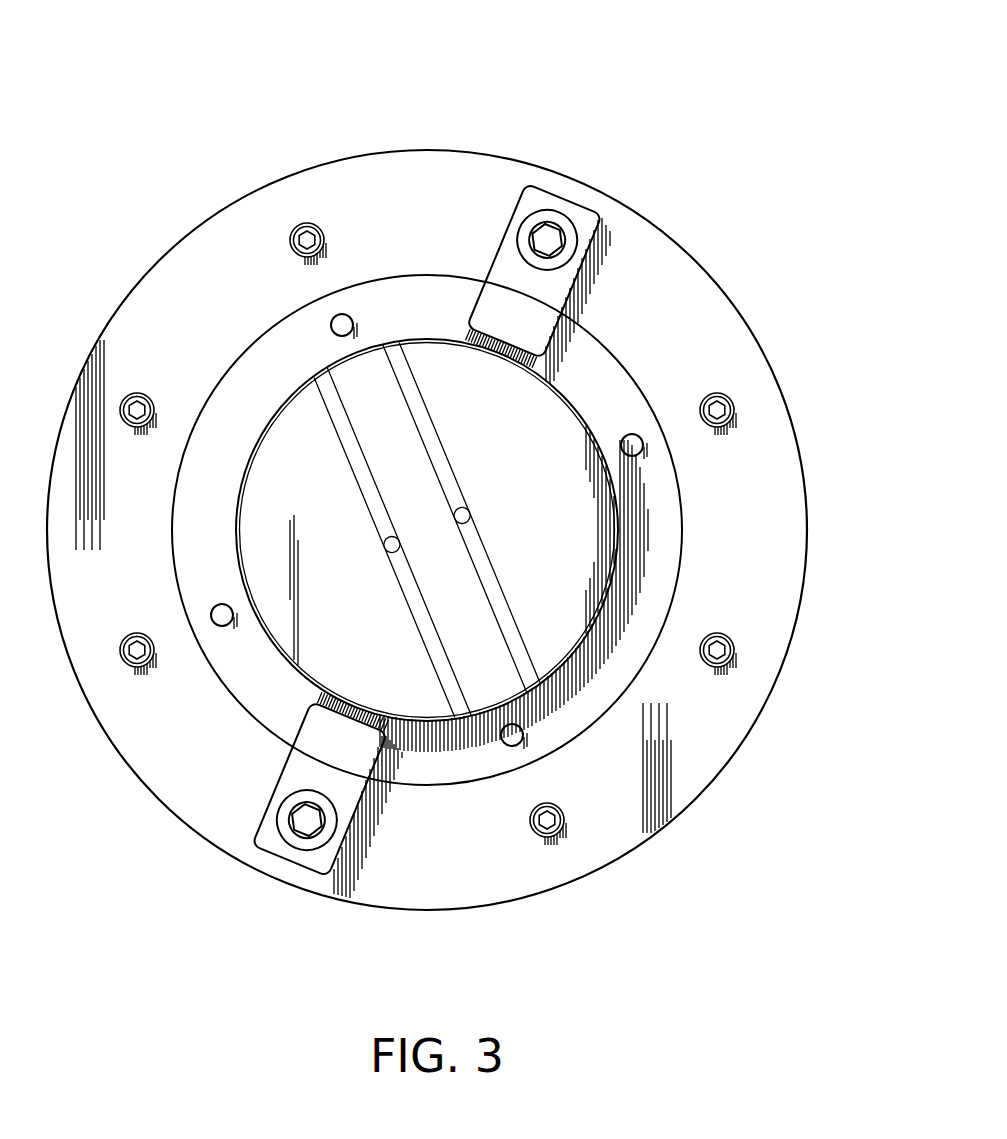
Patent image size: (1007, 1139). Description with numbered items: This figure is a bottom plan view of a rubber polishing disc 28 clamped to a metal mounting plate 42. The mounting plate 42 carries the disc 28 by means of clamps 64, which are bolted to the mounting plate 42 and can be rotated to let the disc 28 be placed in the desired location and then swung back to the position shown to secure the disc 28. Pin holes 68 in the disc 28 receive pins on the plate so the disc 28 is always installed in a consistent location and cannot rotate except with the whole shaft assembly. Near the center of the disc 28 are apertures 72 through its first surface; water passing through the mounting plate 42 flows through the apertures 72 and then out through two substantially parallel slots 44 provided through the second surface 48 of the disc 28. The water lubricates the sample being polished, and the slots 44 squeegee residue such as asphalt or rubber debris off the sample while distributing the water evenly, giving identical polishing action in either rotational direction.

The disc 28 is at (260, 433).
The mounting plate 42 is at (582, 188).
The slot 44 is at (393, 583).
The second surface 48 is at (558, 558).
The clamp 64 is at (498, 247).
The pin hole 68 is at (330, 320).
The aperture 72 is at (467, 515).